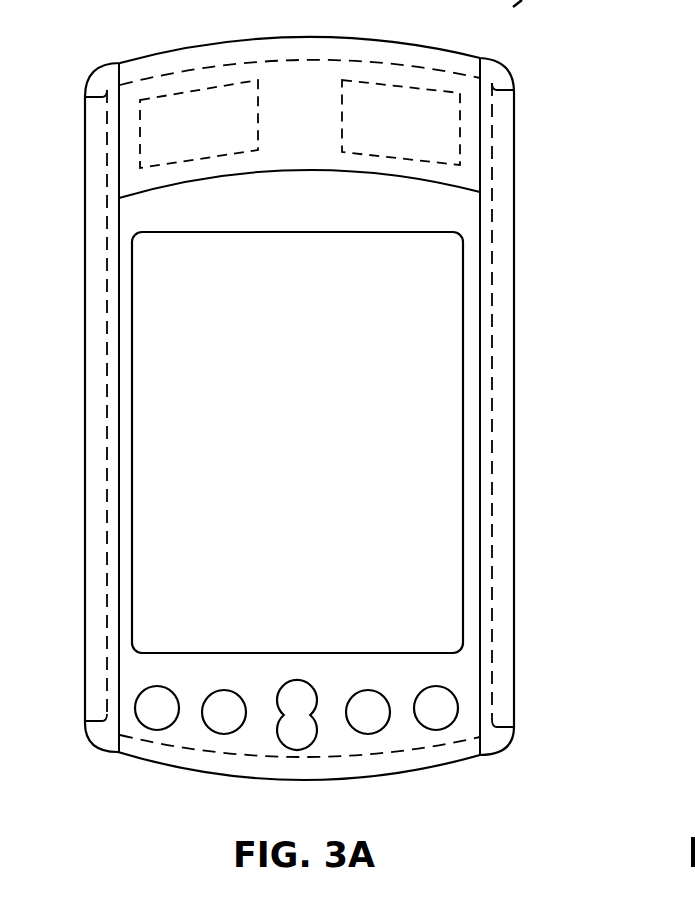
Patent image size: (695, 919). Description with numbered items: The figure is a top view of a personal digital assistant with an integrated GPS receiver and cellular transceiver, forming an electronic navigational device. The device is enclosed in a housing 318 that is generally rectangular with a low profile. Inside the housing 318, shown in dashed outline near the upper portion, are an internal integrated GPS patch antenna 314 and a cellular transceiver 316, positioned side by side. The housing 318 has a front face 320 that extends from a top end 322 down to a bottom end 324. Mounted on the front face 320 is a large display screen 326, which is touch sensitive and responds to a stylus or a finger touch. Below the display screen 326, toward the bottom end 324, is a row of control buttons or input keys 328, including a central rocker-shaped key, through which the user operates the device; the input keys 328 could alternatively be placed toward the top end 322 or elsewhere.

The internal integrated GPS patch antenna 314 is at (198, 98).
The cellular transceiver 316 is at (393, 105).
The housing 318 is at (85, 197).
The front face 320 is at (133, 226).
The top end 322 is at (318, 34).
The bottom end 324 is at (397, 772).
The display screen 326 is at (418, 463).
The input keys 328 is at (152, 732).